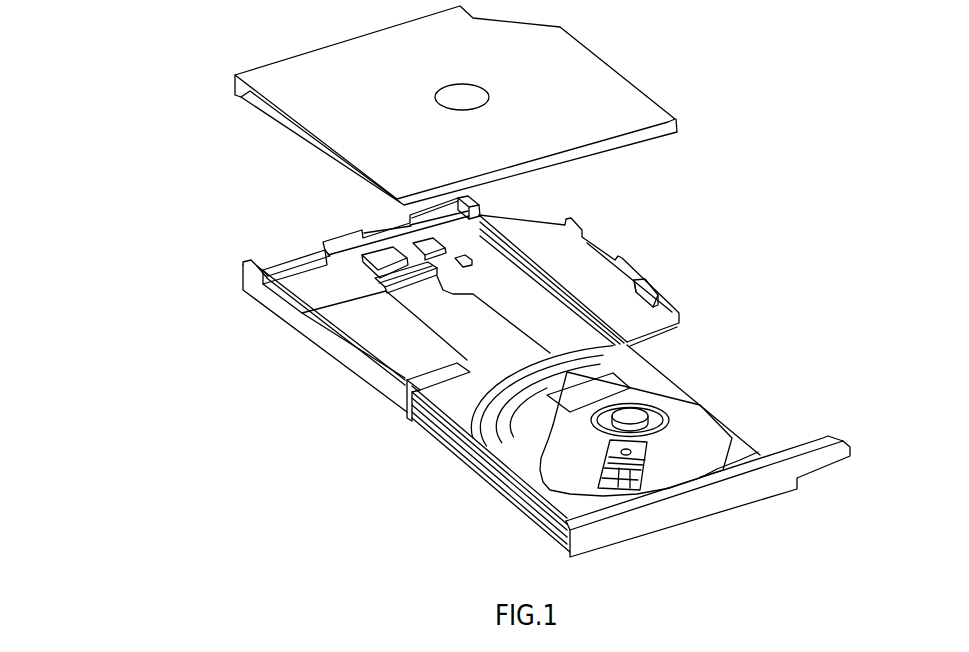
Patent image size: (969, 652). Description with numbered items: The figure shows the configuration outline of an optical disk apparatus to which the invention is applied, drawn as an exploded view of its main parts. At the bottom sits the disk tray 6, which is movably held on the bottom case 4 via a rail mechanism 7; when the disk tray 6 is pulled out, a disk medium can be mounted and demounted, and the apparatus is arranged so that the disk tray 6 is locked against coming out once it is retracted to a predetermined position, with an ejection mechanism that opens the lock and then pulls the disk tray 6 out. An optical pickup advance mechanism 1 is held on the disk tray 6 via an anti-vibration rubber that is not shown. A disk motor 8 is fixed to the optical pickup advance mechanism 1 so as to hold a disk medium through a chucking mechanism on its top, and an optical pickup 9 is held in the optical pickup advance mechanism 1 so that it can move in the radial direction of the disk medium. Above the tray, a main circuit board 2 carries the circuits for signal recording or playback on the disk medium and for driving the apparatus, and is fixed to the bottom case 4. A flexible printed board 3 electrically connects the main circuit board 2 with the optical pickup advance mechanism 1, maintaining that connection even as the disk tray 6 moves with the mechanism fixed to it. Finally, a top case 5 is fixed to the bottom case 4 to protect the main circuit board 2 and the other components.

The optical pickup advance mechanism 1 is at (697, 430).
The main circuit board 2 is at (322, 283).
The flexible printed board 3 is at (438, 320).
The bottom case 4 is at (587, 263).
The top case 5 is at (583, 78).
The disk tray 6 is at (657, 388).
The rail mechanism 7 is at (437, 425).
The disk motor 8 is at (545, 478).
The optical pickup 9 is at (637, 452).